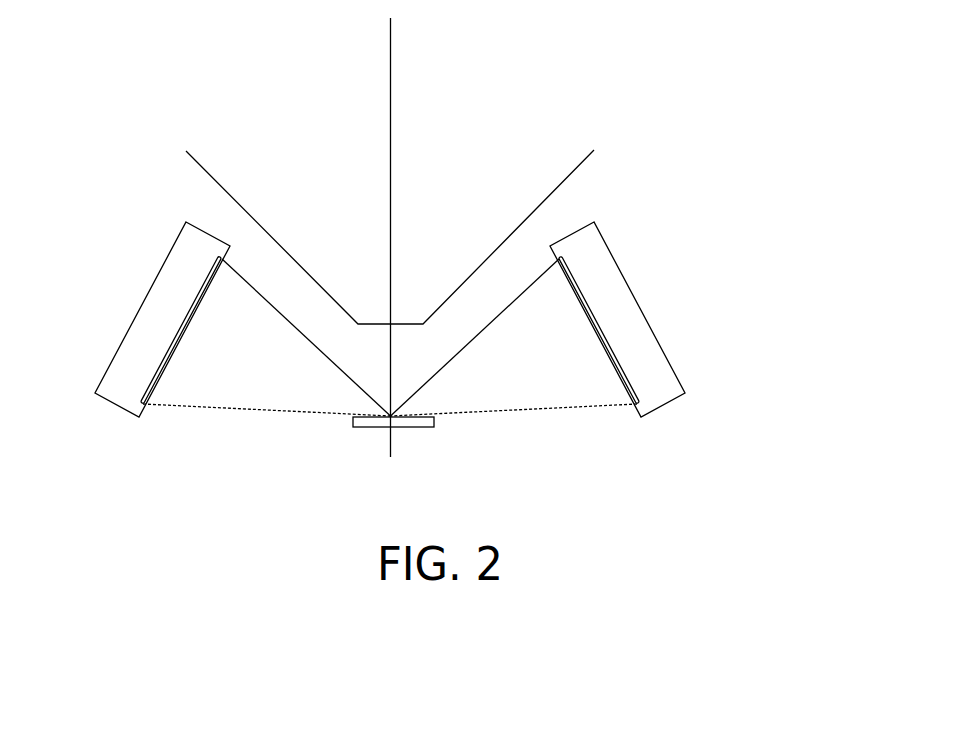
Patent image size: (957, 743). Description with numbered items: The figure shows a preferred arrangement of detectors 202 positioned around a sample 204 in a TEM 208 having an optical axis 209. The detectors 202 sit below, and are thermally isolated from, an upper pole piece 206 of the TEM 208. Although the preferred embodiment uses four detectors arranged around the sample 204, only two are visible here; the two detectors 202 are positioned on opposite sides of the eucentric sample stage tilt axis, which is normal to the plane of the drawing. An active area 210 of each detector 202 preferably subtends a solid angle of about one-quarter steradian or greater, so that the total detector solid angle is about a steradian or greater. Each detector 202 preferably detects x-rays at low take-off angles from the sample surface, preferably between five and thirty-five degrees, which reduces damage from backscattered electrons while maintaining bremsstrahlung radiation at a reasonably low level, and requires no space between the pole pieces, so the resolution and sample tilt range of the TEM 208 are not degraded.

The detector 202 is at (118, 343).
The sample 204 is at (417, 427).
The upper pole piece 206 is at (582, 163).
The TEM 208 is at (682, 90).
The optical axis 209 is at (391, 93).
The active area 210 is at (194, 302).